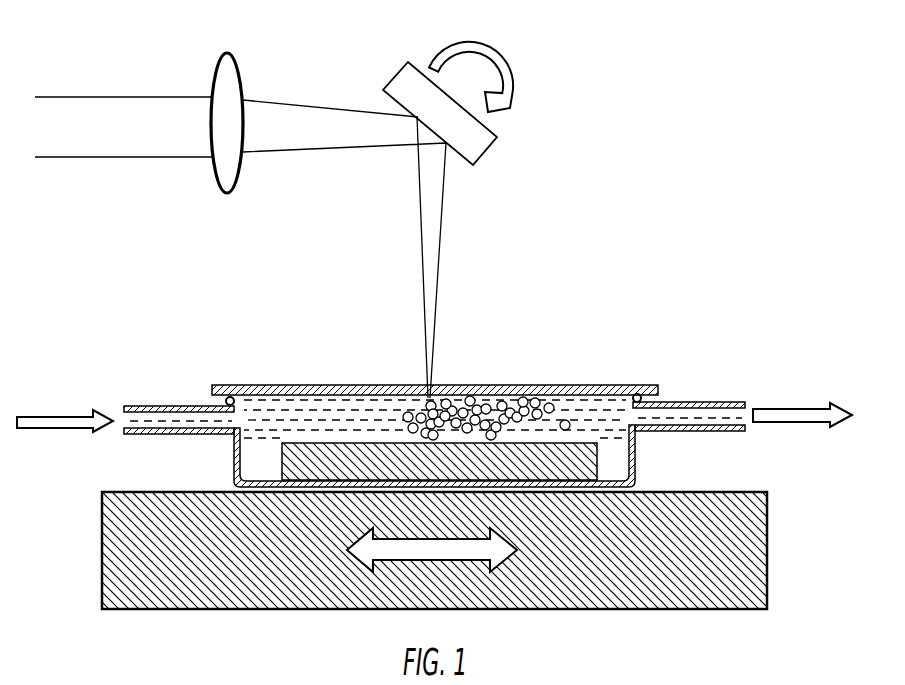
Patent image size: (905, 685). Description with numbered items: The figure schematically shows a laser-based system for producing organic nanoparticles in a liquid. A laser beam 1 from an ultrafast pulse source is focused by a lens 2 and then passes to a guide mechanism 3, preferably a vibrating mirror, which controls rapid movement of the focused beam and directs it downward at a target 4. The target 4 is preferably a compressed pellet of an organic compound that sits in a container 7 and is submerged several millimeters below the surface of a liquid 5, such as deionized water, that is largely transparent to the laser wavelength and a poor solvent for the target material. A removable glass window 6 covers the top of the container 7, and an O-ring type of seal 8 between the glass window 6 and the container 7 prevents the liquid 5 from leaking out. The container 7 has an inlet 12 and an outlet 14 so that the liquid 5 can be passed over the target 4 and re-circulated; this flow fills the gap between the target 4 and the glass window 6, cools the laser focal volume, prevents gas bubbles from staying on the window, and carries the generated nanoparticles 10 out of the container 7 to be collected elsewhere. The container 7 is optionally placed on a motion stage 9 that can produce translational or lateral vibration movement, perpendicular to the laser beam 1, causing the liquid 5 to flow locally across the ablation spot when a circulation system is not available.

The laser beam 1 is at (142, 97).
The lens 2 is at (227, 53).
The guide mechanism 3 is at (490, 149).
The target 4 is at (318, 442).
The liquid 5 is at (589, 408).
The glass window 6 is at (640, 394).
The container 7 is at (637, 460).
The O-ring type of seal 8 is at (229, 397).
The motion stage 9 is at (102, 553).
The nanoparticles 10 is at (509, 405).
The inlet 12 is at (143, 406).
The outlet 14 is at (708, 401).